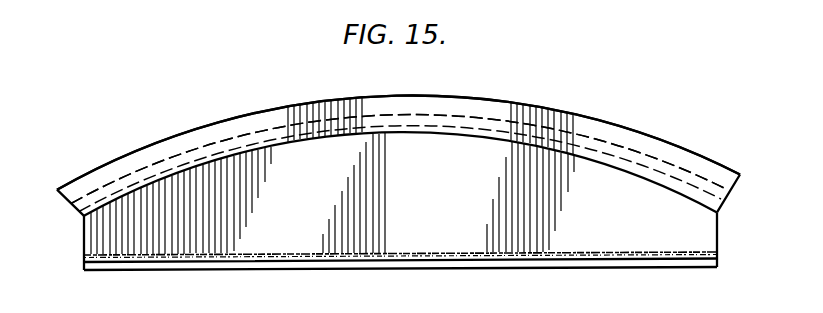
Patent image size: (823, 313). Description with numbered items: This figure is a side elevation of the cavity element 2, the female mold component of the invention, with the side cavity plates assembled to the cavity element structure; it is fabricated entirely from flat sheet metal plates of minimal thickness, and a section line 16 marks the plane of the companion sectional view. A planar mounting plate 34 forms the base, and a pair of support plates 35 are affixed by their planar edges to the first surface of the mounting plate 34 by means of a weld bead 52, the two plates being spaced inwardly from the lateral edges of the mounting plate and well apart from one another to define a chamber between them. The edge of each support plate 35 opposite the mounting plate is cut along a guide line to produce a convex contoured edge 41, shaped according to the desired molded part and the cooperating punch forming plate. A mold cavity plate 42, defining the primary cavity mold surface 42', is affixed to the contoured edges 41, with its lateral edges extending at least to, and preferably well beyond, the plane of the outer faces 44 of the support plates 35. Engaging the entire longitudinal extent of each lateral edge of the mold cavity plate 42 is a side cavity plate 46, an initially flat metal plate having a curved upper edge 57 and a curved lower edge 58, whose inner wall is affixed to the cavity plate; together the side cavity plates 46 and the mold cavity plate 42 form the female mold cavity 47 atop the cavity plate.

The cavity element 2 is at (207, 110).
The section line 16- 16 is at (51, 310).
The mounting plate 34 is at (515, 268).
The support plates 35 is at (307, 218).
The contoured edge 41 is at (639, 155).
The mold cavity plate 42 is at (399, 150).
The primary cavity mold surface 42' is at (399, 131).
The outer faces 44 is at (688, 233).
The side cavity plate 46 is at (433, 114).
The female mold cavity 47 is at (572, 110).
The weld bead 52 is at (642, 262).
The upper edge 57 is at (250, 106).
The lower edge 58 is at (320, 142).